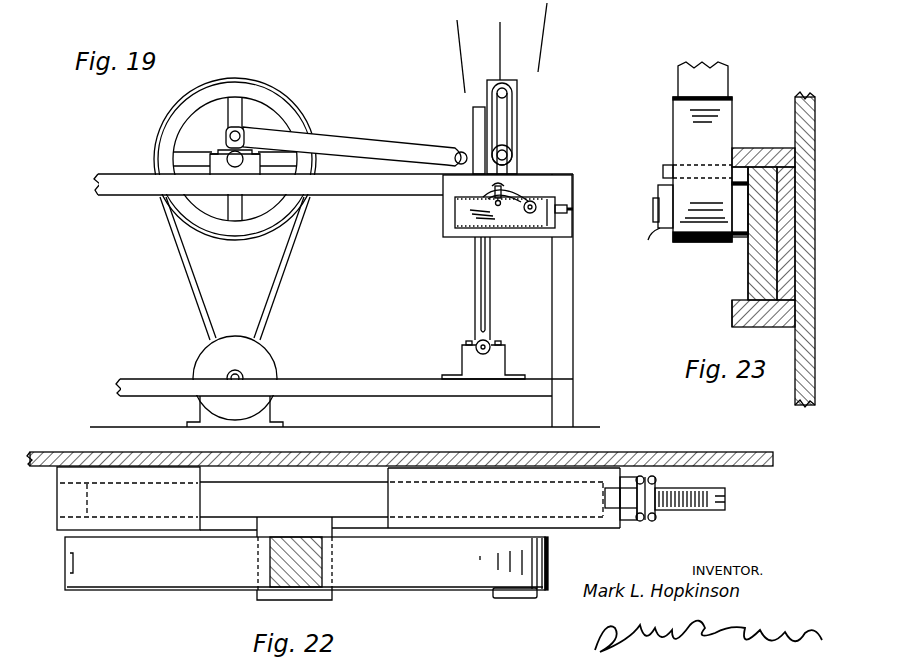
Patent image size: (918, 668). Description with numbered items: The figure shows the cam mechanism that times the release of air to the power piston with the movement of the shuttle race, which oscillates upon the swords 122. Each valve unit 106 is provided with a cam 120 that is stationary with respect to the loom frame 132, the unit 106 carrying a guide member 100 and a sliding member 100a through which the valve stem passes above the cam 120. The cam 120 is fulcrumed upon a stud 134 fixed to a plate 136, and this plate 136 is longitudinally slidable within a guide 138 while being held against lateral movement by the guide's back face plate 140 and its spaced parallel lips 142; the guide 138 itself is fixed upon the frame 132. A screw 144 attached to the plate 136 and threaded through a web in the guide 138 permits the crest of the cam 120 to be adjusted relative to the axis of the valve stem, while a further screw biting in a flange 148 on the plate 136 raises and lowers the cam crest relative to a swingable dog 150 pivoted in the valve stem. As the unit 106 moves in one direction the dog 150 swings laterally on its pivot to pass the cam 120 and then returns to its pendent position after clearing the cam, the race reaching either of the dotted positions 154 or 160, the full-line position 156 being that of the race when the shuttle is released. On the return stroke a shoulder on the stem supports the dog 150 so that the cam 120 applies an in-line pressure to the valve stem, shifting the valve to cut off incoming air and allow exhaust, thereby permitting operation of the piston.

In FIG. 19, the slide frame 100 is at (515, 85).
In FIG. 19, the slide rod 100a is at (518, 115).
In FIG. 19, the unit 106 is at (517, 155).
In FIG. 19, the cam 120 is at (517, 193).
In FIG. 22, the cam 120 is at (306, 563).
In FIG. 23, the cam 120 is at (728, 117).
In FIG. 19, the swords 122 is at (481, 285).
In FIG. 22, the frame 132 is at (703, 432).
In FIG. 23, the frame 132 is at (793, 402).
In FIG. 22, the stud 134 is at (515, 593).
In FIG. 23, the stud 134 is at (653, 223).
In FIG. 19, the plate 136 is at (470, 208).
In FIG. 22, the plate 136 is at (338, 498).
In FIG. 23, the plate 136 is at (760, 282).
In FIG. 22, the guide 138 is at (583, 541).
In FIG. 23, the guide 138 is at (753, 337).
In FIG. 23, the back face plate 140 is at (782, 260).
In FIG. 23, the lips 142 is at (738, 172).
In FIG. 22, the screw 144 is at (677, 513).
In FIG. 22, the flange 148 is at (323, 593).
In FIG. 19, the swingable dog 150 is at (490, 186).
In FIG. 22, the swingable dog 150 is at (303, 567).
In FIG. 23, the swingable dog 150 is at (717, 73).
In FIG. 19, the dotted-line position 154 is at (543, 45).
In FIG. 19, the full-line position 156 is at (500, 33).
In FIG. 19, the dotted-line position 160 is at (459, 55).